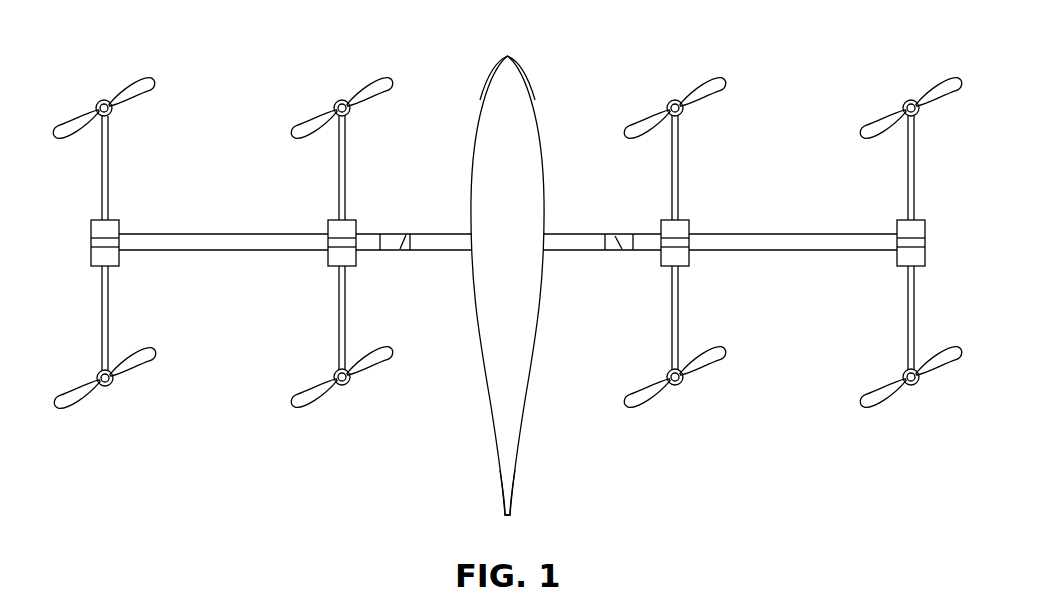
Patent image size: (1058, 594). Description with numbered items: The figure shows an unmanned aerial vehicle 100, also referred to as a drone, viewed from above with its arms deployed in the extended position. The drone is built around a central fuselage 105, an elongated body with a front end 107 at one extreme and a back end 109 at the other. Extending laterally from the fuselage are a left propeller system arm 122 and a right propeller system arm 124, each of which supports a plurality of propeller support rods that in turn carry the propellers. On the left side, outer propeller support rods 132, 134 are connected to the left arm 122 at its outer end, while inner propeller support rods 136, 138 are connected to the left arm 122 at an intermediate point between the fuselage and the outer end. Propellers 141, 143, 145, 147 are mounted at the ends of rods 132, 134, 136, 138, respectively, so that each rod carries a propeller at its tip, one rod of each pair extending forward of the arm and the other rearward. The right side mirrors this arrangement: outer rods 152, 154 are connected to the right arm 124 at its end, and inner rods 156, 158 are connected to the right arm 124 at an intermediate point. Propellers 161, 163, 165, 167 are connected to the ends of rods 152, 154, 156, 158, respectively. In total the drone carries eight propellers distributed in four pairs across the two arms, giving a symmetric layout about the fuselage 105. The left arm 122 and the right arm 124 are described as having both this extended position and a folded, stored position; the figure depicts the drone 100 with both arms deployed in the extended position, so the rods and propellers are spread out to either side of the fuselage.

The unmanned aerial vehicle 100 is at (565, 58).
The fuselage 105 is at (470, 200).
The front end 107 is at (507, 56).
The back end 109 is at (508, 515).
The left propeller system arm 122 is at (362, 252).
The right propeller system arm 124 is at (640, 252).
The outer propeller support rod 132 is at (102, 140).
The outer propeller support rod 134 is at (102, 300).
The inner propeller support rod 136 is at (338, 148).
The inner propeller support rod 138 is at (338, 300).
The propeller 141 is at (112, 98).
The propeller 143 is at (80, 398).
The propeller 145 is at (340, 98).
The propeller 147 is at (330, 390).
The outer rod 152 is at (907, 148).
The outer rod 154 is at (907, 300).
The inner rod 156 is at (672, 148).
The inner rod 158 is at (672, 315).
The propeller 161 is at (910, 98).
The propeller 163 is at (890, 400).
The propeller 165 is at (678, 98).
The propeller 167 is at (652, 400).